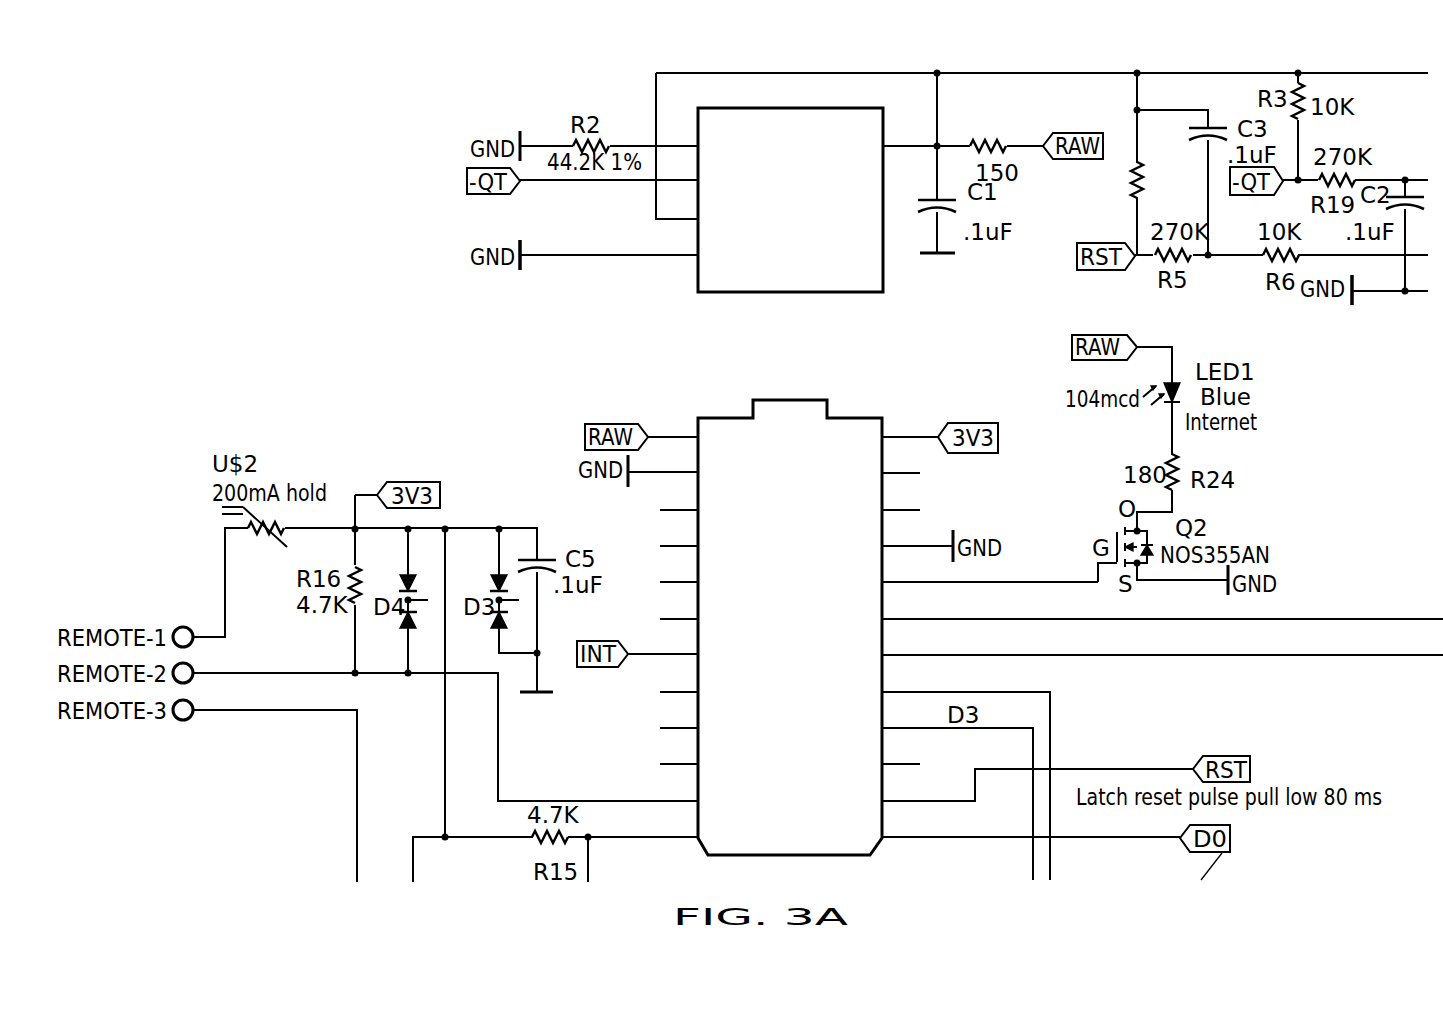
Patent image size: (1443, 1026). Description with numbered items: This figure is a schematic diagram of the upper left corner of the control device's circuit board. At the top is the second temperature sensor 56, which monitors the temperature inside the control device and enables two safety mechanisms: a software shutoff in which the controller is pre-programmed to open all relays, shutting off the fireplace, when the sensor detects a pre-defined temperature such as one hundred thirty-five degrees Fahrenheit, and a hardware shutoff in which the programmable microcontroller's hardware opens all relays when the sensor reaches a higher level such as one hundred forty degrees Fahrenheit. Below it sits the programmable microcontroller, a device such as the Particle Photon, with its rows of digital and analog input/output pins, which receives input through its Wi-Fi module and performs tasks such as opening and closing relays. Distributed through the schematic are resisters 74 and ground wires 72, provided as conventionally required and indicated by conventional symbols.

The second temperature sensor 56 is at (813, 127).
The resisters 74 is at (1137, 165).
The ground wires 72 is at (565, 257).